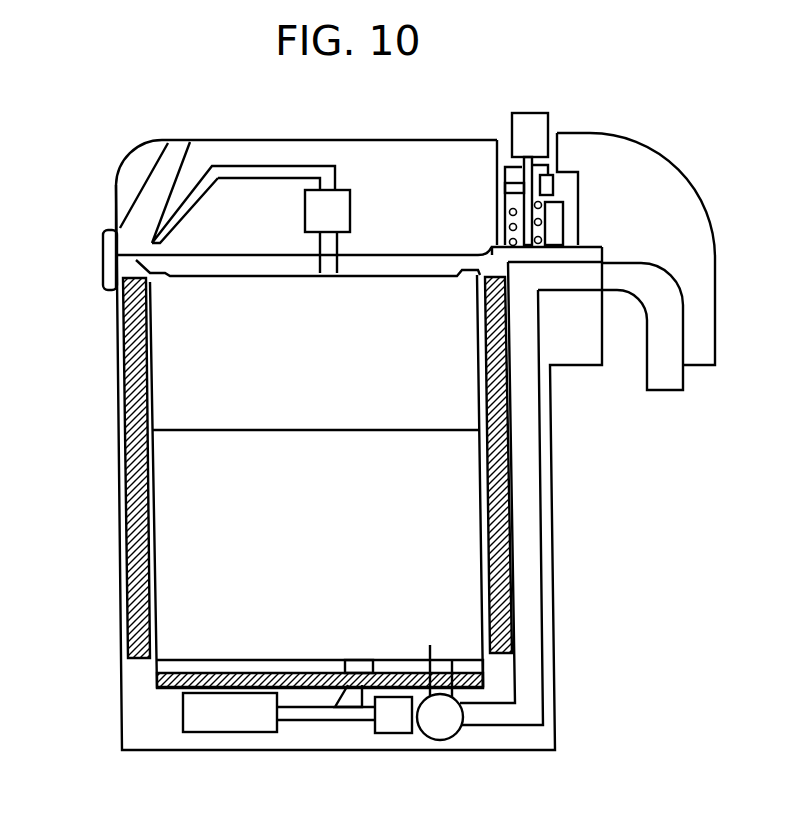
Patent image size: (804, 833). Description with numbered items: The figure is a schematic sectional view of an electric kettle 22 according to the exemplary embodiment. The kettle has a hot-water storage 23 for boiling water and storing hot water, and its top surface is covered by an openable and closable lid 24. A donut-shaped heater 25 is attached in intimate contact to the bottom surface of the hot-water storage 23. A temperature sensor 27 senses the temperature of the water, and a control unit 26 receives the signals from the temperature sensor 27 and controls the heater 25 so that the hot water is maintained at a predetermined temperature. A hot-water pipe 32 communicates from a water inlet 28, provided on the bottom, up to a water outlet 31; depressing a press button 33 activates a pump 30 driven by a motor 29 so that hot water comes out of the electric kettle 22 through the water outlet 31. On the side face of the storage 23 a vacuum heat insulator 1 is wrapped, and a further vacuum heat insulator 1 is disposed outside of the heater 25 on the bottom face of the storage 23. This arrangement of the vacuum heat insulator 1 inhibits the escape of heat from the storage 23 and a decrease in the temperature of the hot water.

The vacuum heat insulator 1 is at (127, 455).
The electric kettle 22 is at (555, 556).
The hot-water storage 23 is at (135, 613).
The lid 24 is at (335, 140).
The heater 25 is at (160, 668).
The control unit 26 is at (183, 712).
The temperature sensor 27 is at (355, 688).
The water inlet 28 is at (452, 662).
The motor 29 is at (370, 733).
The pump 30 is at (438, 740).
The water outlet 31 is at (665, 390).
The hot-water pipe 32 is at (530, 648).
The press button 33 is at (533, 113).